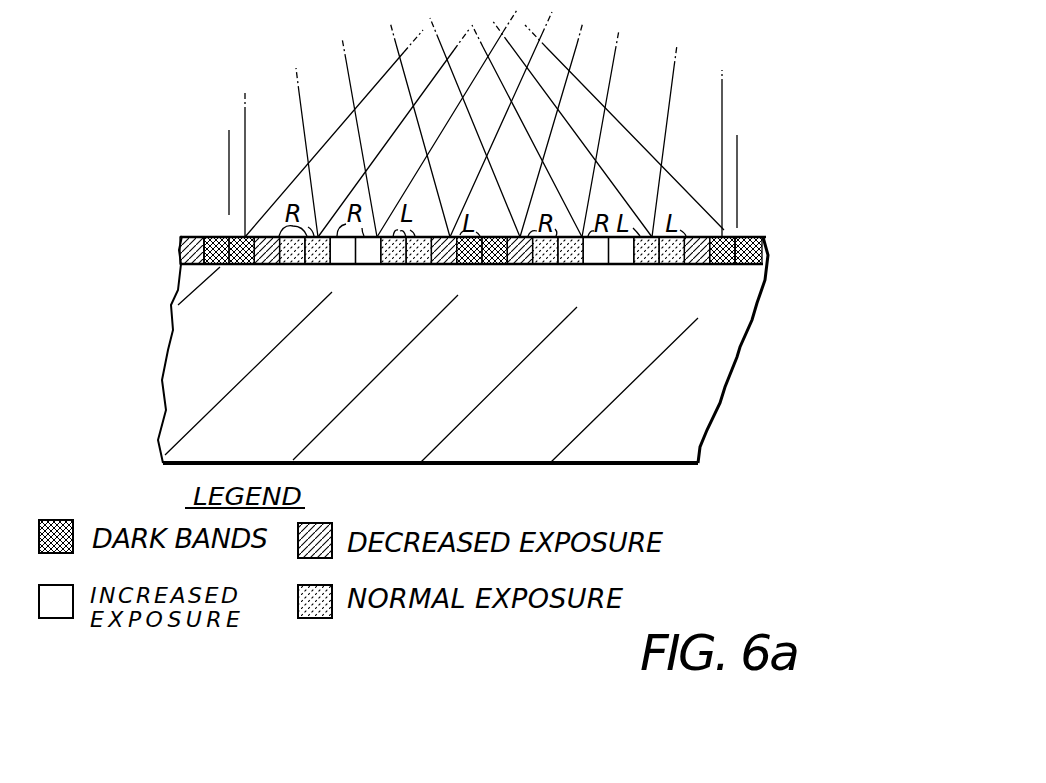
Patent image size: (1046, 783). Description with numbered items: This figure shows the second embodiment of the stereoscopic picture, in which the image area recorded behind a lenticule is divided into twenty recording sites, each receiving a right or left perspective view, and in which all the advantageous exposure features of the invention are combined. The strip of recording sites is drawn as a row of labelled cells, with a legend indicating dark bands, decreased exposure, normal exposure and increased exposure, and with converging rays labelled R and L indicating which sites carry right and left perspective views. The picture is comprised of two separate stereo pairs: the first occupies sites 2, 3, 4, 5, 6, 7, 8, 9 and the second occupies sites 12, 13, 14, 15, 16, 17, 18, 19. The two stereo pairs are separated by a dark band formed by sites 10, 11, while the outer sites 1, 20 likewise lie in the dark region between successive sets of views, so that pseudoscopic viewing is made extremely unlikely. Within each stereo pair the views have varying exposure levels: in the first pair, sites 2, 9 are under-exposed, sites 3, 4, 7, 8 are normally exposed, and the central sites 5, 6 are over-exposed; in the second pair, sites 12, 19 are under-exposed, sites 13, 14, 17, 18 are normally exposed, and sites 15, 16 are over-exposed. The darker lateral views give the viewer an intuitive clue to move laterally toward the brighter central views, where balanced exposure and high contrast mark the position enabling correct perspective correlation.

The recording site 1 is at (241, 265).
The recording site 2 is at (266, 265).
The recording site 3 is at (292, 265).
The recording site 4 is at (317, 265).
The recording site 5 is at (342, 265).
The recording site 6 is at (368, 265).
The recording site 7 is at (393, 265).
The recording site 8 is at (418, 265).
The recording site 9 is at (443, 265).
The recording site 10 is at (466, 265).
The recording site 11 is at (494, 278).
The recording site 12 is at (520, 265).
The recording site 13 is at (546, 278).
The recording site 14 is at (571, 265).
The recording site 15 is at (597, 278).
The recording site 16 is at (621, 265).
The recording site 17 is at (649, 278).
The recording site 18 is at (672, 265).
The recording site 19 is at (699, 278).
The recording site 20 is at (722, 265).